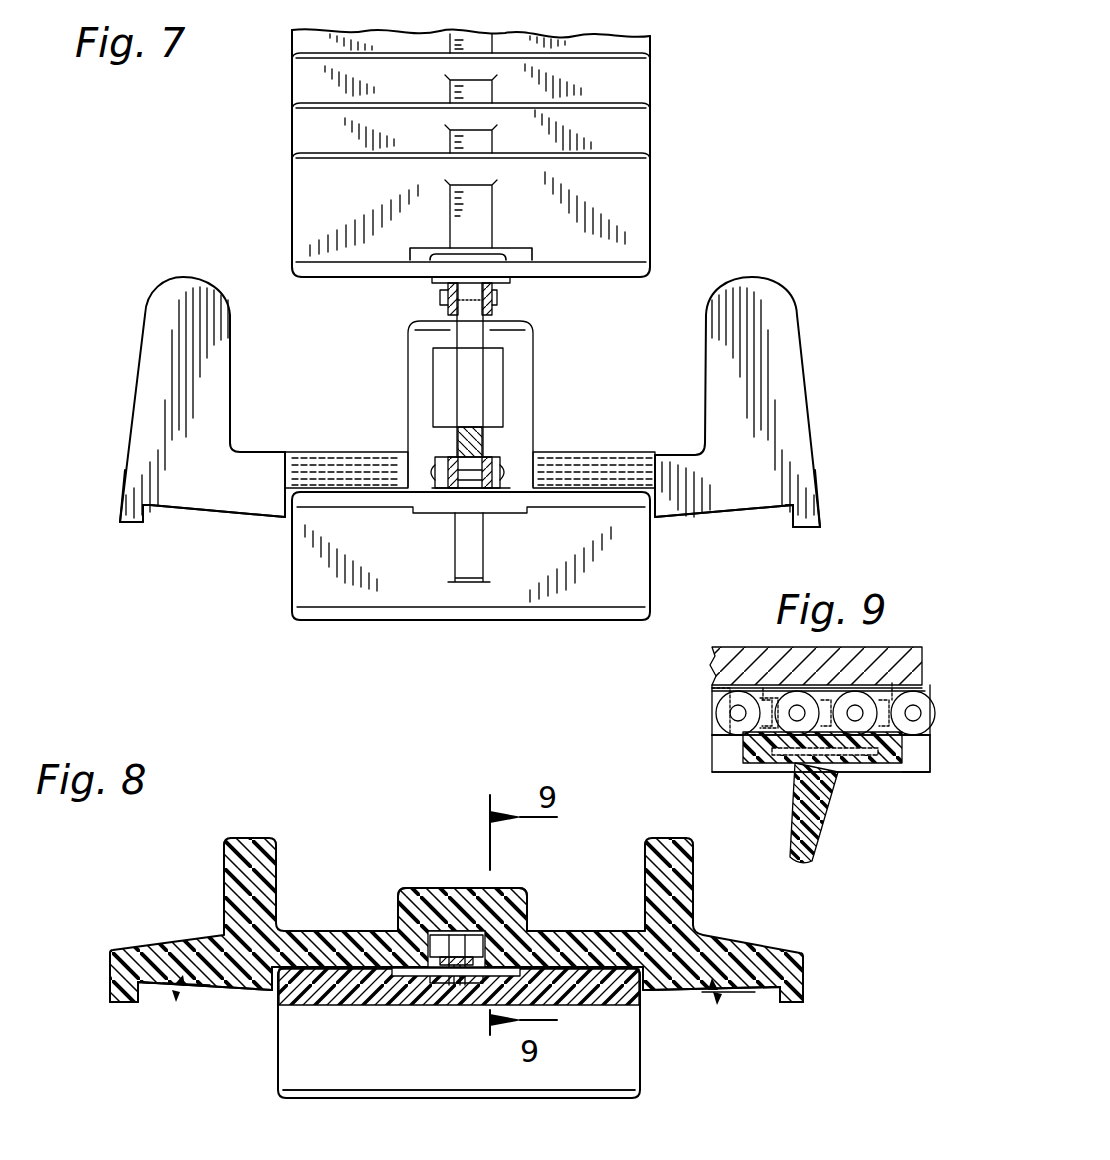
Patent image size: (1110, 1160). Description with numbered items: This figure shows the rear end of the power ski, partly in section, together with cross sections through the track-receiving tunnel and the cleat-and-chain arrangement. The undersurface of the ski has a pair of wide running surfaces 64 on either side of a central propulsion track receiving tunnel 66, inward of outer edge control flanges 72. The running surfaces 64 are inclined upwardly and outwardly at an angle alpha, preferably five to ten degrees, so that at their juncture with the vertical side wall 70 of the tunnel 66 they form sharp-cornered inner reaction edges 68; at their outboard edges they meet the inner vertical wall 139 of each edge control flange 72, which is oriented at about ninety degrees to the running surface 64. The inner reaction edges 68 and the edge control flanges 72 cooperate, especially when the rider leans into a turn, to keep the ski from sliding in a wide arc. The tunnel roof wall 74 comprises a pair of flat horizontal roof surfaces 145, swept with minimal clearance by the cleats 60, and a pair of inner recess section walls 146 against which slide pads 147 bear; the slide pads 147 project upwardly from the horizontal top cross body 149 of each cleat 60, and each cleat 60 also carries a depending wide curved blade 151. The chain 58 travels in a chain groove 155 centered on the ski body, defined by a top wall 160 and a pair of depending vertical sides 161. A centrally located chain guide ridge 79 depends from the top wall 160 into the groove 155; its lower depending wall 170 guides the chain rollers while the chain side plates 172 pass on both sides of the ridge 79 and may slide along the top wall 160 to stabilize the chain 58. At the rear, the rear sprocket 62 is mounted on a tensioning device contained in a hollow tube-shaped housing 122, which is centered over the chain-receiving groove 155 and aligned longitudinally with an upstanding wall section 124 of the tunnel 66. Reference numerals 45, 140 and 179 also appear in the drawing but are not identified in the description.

In FIG. 8, the base plate 45 is at (577, 948).
In FIG. 9, the chain 58 is at (708, 743).
In FIG. 7, the cleats 60 is at (630, 228).
In FIG. 9, the cleats 60 is at (782, 817).
In FIG. 7, the rear sprocket 62 is at (472, 336).
In FIG. 7, the running surfaces 64 is at (190, 509).
In FIG. 8, the running surfaces 64 is at (222, 992).
In FIG. 8, the propulsion track receiving tunnel 66 is at (583, 965).
In FIG. 7, the inner reaction edges 68 is at (285, 520).
In FIG. 8, the inner reaction edges 68 is at (272, 992).
In FIG. 7, the vertical side wall 70 is at (805, 525).
In FIG. 8, the vertical side wall 70 is at (224, 930).
In FIG. 7, the outer edge control flanges 72 is at (118, 535).
In FIG. 8, the outer edge control flanges 72 is at (112, 1012).
In FIG. 8, the roof wall 74 is at (360, 995).
In FIG. 8, the chain guide ridge 79 is at (456, 935).
In FIG. 7, the hollow tube-shaped housing 122 is at (517, 364).
In FIG. 8, the upstanding wall section 124 is at (407, 888).
In FIG. 7, the inner vertical wall 139 is at (145, 515).
In FIG. 8, the inner vertical wall 139 is at (140, 1005).
In FIG. 7, the foot edge 140 is at (118, 509).
In FIG. 8, the foot edge 140 is at (805, 985).
In FIG. 7, the flat horizontal roof surfaces 145 is at (307, 492).
In FIG. 8, the flat horizontal roof surfaces 145 is at (390, 950).
In FIG. 8, the inner recess section walls 146 is at (420, 888).
In FIG. 7, the slide pads 147 is at (505, 284).
In FIG. 9, the slide pads 147 is at (763, 690).
In FIG. 8, the slide pads 147 is at (405, 940).
In FIG. 7, the top cross body 149 is at (620, 497).
In FIG. 9, the top cross body 149 is at (728, 772).
In FIG. 8, the top cross body 149 is at (305, 975).
In FIG. 7, the curved blade 151 is at (466, 600).
In FIG. 8, the curved blade 151 is at (358, 1098).
In FIG. 7, the chain groove 155 is at (500, 457).
In FIG. 9, the chain groove 155 is at (688, 693).
In FIG. 7, the top wall 160 is at (440, 468).
In FIG. 9, the top wall 160 is at (768, 705).
In FIG. 8, the top wall 160 is at (440, 970).
In FIG. 7, the depending vertical sides 161 is at (437, 473).
In FIG. 9, the depending vertical sides 161 is at (915, 745).
In FIG. 8, the depending vertical sides 161 is at (475, 935).
In FIG. 7, the lower depending wall 170 is at (468, 492).
In FIG. 9, the lower depending wall 170 is at (702, 680).
In FIG. 8, the lower depending wall 170 is at (461, 988).
In FIG. 7, the chain side plates 172 is at (450, 492).
In FIG. 9, the chain side plates 172 is at (708, 728).
In FIG. 8, the chain side plates 172 is at (438, 985).
In FIG. 7, the hatched member 179 is at (470, 432).